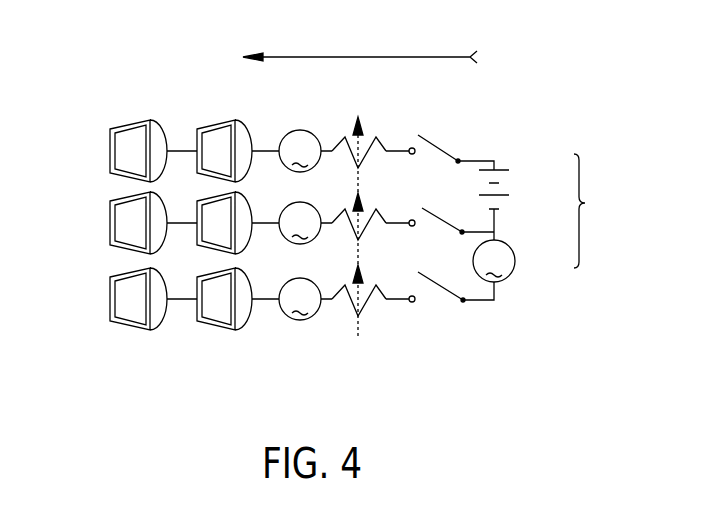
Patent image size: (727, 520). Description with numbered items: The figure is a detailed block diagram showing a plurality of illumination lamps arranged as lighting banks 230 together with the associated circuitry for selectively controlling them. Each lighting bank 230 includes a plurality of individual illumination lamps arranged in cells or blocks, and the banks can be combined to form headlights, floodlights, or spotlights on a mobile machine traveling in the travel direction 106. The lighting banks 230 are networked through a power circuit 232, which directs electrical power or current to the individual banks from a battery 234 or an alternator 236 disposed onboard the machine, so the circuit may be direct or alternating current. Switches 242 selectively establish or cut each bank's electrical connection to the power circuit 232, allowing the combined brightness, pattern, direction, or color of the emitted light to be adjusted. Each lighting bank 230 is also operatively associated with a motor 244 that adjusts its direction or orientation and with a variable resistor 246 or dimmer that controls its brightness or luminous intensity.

The travel direction 106 is at (417, 57).
The lighting bank 230 is at (128, 140).
The motor 244 is at (285, 137).
The variable resistor 246 is at (376, 137).
The switch 242 is at (420, 135).
The battery 234 is at (502, 183).
The alternator 236 is at (510, 243).
The power circuit 232 is at (595, 211).